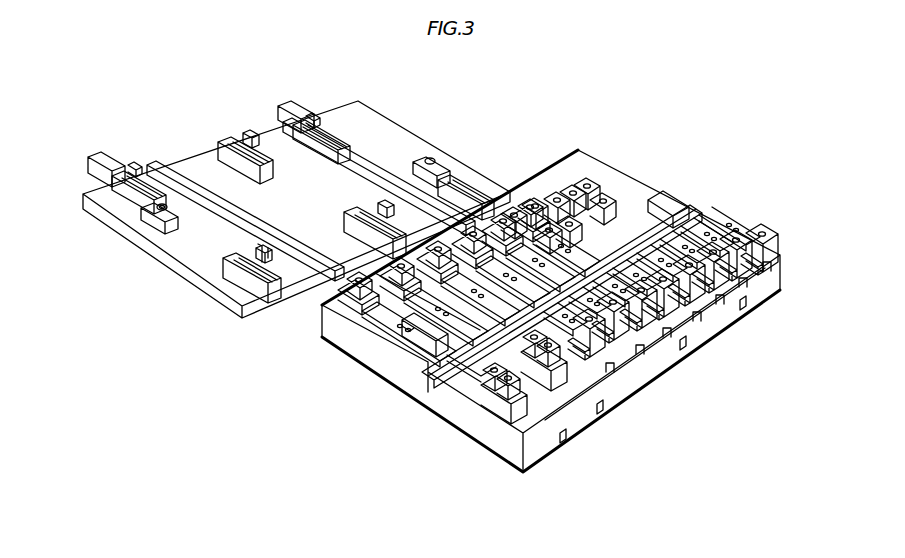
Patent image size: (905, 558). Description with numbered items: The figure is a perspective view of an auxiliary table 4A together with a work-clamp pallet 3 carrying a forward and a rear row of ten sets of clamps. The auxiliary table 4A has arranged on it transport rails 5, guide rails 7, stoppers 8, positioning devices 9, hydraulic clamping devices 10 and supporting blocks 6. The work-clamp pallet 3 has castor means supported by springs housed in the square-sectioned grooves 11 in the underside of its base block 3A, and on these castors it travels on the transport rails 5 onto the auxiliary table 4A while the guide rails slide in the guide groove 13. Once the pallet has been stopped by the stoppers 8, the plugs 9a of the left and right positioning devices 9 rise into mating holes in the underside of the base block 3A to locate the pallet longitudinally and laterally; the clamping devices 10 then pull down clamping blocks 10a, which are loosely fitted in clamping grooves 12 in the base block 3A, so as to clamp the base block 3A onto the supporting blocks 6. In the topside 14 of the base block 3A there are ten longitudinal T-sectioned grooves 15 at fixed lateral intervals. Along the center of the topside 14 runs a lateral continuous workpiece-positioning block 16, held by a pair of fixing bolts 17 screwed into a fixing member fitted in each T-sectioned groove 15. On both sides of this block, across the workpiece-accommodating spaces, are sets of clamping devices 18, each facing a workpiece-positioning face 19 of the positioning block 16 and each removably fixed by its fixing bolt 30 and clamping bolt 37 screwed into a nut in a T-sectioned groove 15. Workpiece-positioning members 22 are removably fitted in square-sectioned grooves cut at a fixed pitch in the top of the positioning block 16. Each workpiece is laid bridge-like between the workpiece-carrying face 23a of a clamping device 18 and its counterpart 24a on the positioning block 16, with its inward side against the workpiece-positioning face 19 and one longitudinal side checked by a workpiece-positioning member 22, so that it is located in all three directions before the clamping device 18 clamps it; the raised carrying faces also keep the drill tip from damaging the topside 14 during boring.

The work-clamp pallet 3 is at (607, 163).
The base block 3A is at (645, 368).
The auxiliary table 4A is at (362, 93).
The transport rails 5 is at (233, 207).
The supporting blocks 6 is at (250, 268).
The guide rails 7 is at (400, 206).
The stoppers 8 is at (108, 152).
The positioning devices 9 is at (167, 190).
The plugs 9a is at (166, 204).
The hydraulic clamping devices 10 is at (250, 124).
The clamping blocks 10a is at (280, 245).
The square-sectioned grooves 11 is at (600, 410).
The clamping grooves 12 is at (563, 442).
The guide groove 13 is at (690, 347).
The topside 14 is at (690, 242).
The T-sectioned grooves 15 is at (700, 325).
The workpiece-positioning block 16 is at (671, 196).
The fixing bolts 17 is at (634, 205).
The clamping devices 18 is at (547, 180).
The workpiece-positioning face 19 is at (433, 352).
The workpiece-positioning members 22 is at (458, 340).
The workpiece-carrying face 23a is at (377, 317).
The workpiece-carrying face of positioning block 24a is at (473, 334).
The fixing bolt 30 is at (524, 392).
The clamping bolt 37 is at (497, 388).